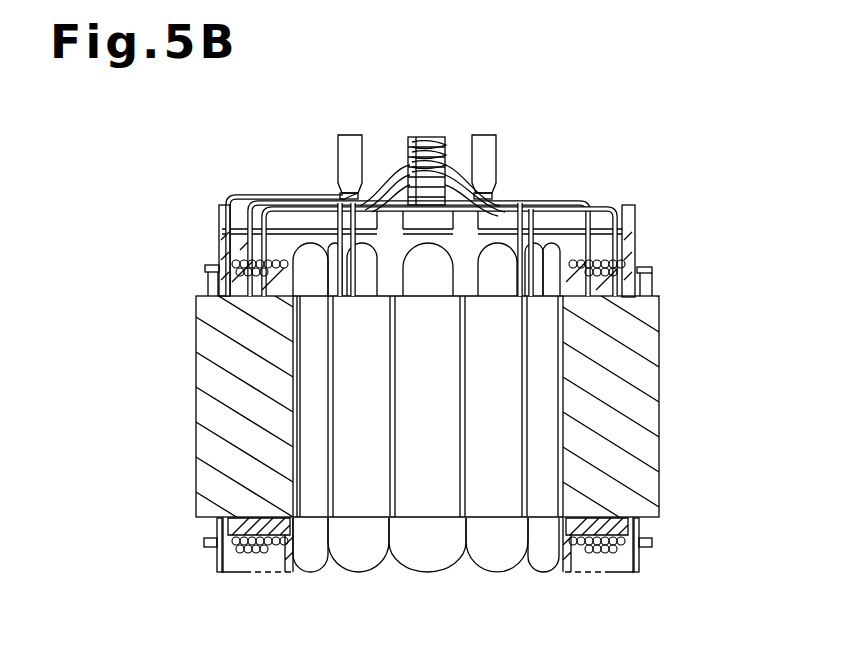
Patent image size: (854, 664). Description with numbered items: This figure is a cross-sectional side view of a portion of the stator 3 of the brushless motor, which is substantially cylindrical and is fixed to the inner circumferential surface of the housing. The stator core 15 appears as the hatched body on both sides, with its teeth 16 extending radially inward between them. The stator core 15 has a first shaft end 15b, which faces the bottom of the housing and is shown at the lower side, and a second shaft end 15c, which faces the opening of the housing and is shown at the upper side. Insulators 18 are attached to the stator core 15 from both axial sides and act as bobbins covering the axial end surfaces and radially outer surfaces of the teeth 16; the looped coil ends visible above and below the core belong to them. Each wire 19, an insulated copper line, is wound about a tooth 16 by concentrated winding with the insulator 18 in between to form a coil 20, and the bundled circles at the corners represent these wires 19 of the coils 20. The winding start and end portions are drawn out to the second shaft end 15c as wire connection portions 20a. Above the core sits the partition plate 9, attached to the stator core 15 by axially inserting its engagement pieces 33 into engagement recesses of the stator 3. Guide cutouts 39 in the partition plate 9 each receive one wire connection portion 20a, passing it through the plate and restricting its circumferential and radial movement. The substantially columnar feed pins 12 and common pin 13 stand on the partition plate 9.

The stator 3 is at (681, 144).
The partition plate 9 is at (624, 210).
The feed pin 12 is at (355, 138).
The common pin 13 is at (430, 139).
The stator core 15 is at (652, 378).
The first shaft end 15b is at (210, 577).
The second shaft end 15c is at (213, 204).
The tooth 16 is at (568, 403).
The insulator 18 is at (362, 562).
The wire 19 is at (608, 202).
The coil 20 is at (270, 556).
The wire connection portion 20a is at (448, 170).
The engagement piece 33 is at (633, 256).
The guide cutout 39 is at (515, 222).